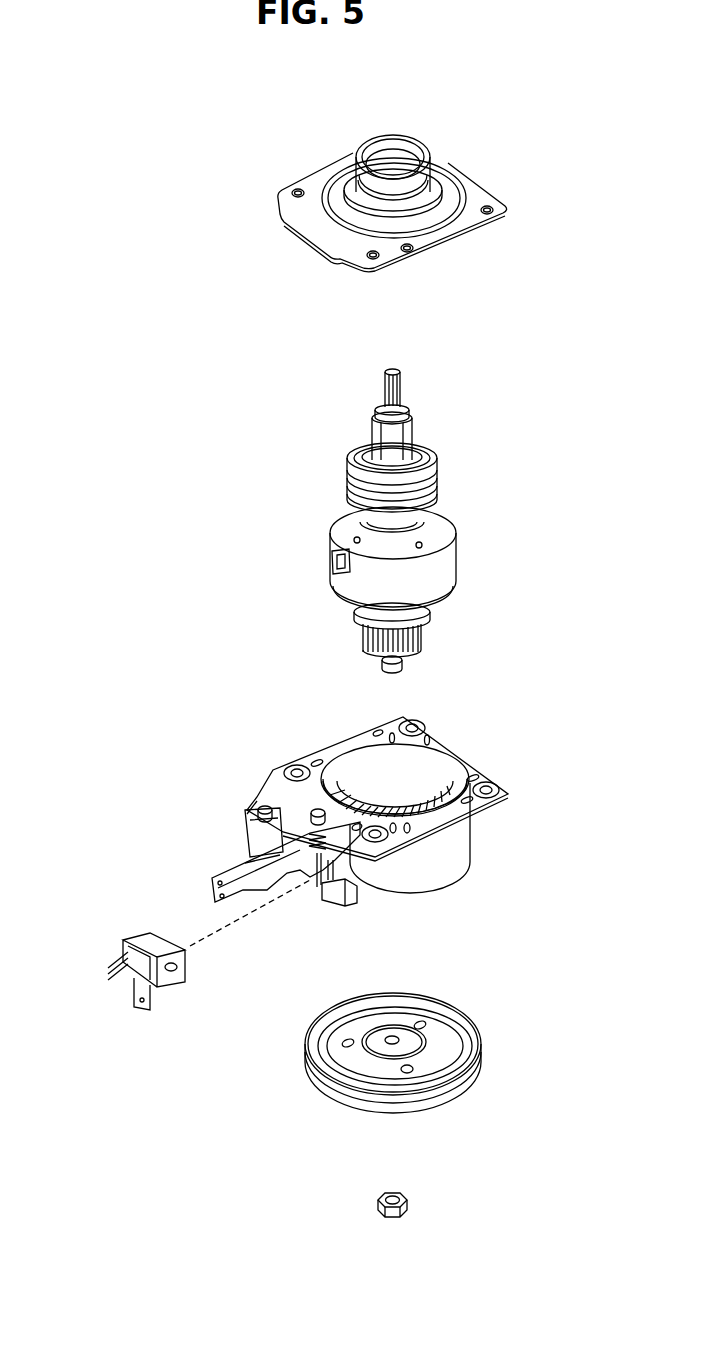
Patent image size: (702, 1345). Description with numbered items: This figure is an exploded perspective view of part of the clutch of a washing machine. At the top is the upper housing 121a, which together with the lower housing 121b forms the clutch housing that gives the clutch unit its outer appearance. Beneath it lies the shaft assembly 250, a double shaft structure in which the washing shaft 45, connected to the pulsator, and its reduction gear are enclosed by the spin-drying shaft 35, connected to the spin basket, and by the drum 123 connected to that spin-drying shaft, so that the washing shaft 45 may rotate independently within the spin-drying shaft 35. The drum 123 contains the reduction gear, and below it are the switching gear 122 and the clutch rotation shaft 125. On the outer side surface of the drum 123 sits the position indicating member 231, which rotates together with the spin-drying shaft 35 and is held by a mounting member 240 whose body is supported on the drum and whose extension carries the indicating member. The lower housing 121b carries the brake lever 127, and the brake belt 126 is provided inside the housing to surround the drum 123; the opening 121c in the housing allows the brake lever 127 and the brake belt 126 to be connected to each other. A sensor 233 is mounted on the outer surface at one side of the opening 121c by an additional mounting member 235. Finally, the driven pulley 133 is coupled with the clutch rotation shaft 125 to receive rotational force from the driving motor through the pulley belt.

The upper housing 121a is at (477, 181).
The shaft assembly 250 is at (358, 526).
The washing shaft 45 is at (400, 385).
The spin-drying shaft 35 is at (412, 430).
The mounting member 240 is at (331, 533).
The position indicating member 231 is at (331, 562).
The drum 123 is at (448, 565).
The switching gear 122 is at (427, 627).
The clutch rotation shaft 125 is at (402, 666).
The lower housing 121b is at (374, 821).
The brake belt 126 is at (370, 790).
The brake lever 127 is at (230, 873).
The opening 121c is at (333, 907).
The sensor 233 is at (128, 955).
The mounting member 235 is at (136, 988).
The driven pulley 133 is at (467, 1027).